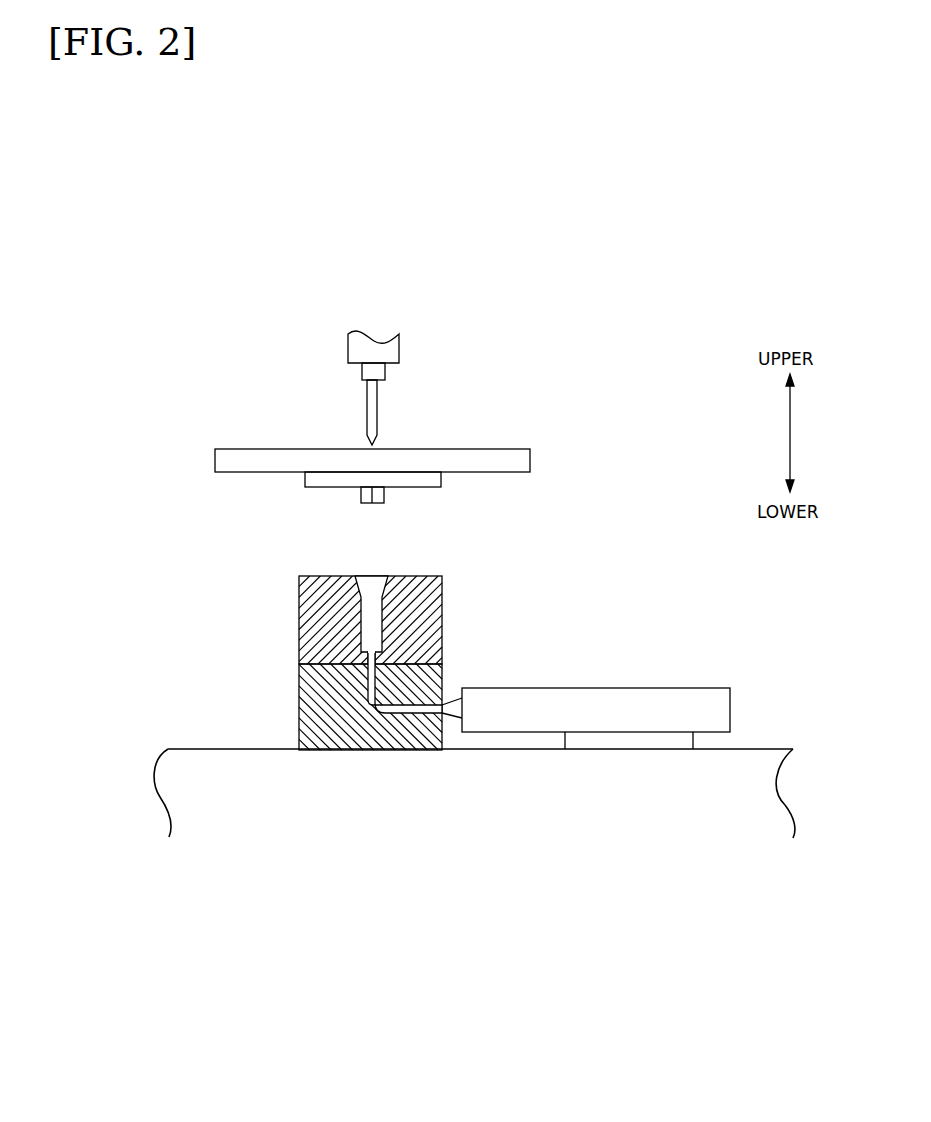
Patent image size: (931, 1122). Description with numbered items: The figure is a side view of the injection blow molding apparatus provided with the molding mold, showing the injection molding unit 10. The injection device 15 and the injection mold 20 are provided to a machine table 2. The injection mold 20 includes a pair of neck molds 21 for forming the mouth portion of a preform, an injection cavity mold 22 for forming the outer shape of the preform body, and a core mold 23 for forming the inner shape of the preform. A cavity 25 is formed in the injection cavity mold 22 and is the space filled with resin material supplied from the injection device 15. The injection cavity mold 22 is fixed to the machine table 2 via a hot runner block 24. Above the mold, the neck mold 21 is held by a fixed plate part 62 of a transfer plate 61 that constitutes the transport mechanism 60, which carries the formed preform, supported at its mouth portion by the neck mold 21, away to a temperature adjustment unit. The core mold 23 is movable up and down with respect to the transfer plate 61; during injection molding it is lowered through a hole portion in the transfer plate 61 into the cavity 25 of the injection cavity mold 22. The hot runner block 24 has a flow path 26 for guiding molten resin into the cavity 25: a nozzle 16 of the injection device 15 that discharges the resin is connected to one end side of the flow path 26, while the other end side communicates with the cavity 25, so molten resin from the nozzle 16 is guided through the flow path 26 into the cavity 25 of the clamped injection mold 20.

The machine table 2 is at (757, 760).
The injection molding unit 10 is at (616, 267).
The injection device 15 is at (678, 692).
The nozzle 16 is at (450, 700).
The injection mold 20 is at (467, 571).
The neck mold 21 is at (385, 495).
The injection cavity mold 22 is at (323, 578).
The core mold 23 is at (376, 410).
The hot runner block 24 is at (298, 718).
The cavity 25 is at (378, 622).
The flow path 26 is at (371, 712).
The transport mechanism 60 is at (491, 366).
The transfer plate 61 is at (505, 452).
The fixed plate part 62 is at (305, 478).